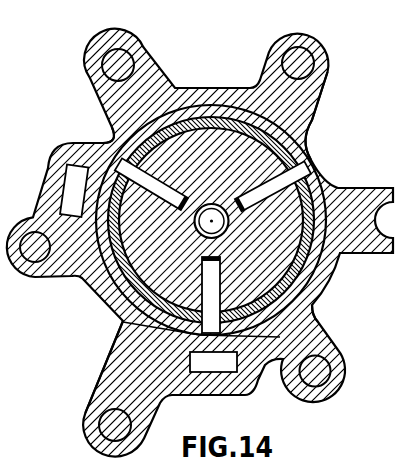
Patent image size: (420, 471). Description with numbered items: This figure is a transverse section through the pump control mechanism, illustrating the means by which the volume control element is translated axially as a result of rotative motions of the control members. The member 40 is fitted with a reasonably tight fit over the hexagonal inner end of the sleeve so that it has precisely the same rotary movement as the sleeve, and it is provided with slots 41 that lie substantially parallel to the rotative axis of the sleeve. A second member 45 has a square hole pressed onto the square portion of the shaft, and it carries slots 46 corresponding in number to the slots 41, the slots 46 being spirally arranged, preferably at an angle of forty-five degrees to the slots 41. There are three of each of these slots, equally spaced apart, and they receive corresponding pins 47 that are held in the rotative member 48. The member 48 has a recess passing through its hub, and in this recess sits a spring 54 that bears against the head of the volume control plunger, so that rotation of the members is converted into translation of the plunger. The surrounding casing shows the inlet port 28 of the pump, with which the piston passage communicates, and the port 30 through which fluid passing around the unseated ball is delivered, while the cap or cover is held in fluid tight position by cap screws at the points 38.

The inlet port 28 is at (74, 190).
The port 30 is at (213, 362).
The cap screw points 38 is at (283, 55).
The member 40 is at (313, 268).
The slots 41 is at (337, 187).
The member 45 is at (300, 285).
The slots 46 is at (112, 357).
The pins 47 is at (103, 145).
The rotative member 48 is at (203, 295).
The spring 54 is at (232, 233).